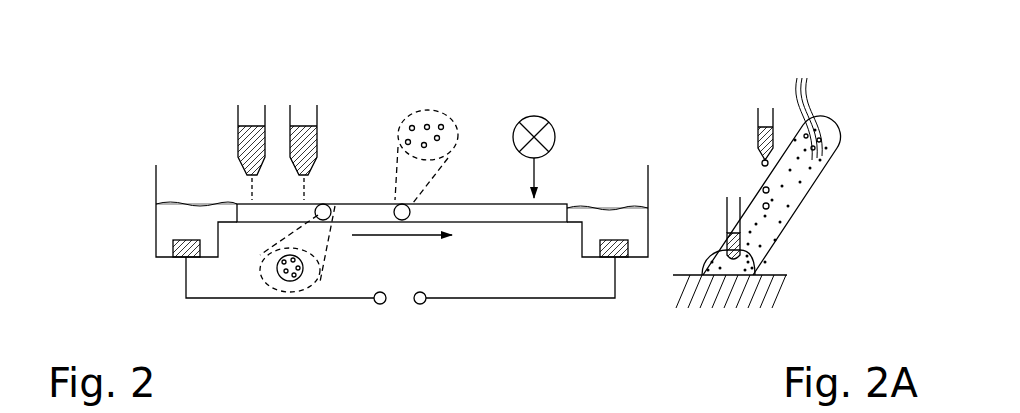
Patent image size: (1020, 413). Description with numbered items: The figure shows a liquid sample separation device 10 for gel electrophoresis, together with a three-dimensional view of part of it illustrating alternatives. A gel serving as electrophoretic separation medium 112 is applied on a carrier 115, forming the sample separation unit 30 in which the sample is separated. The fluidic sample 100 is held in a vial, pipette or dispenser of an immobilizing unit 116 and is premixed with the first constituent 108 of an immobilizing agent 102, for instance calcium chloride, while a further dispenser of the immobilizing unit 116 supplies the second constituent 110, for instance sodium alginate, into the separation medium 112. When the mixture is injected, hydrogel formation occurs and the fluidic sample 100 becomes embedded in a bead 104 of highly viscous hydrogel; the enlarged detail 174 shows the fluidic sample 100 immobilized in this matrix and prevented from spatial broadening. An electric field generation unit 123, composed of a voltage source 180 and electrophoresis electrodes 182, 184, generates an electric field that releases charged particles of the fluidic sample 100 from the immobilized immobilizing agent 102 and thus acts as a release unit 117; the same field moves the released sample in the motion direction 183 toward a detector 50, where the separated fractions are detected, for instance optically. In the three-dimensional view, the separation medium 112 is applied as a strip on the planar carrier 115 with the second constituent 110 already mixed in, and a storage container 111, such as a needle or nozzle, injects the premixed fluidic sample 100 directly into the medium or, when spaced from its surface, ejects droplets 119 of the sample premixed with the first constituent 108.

In FIG. 2, the sample separation device 10 is at (125, 190).
In FIG. 2A, the sample separation device 10 is at (833, 102).
In FIG. 2, the sample separation unit 30 is at (458, 209).
In FIG. 2, the detector 50 is at (536, 115).
In FIG. 2, the fluidic sample 100 is at (248, 127).
In FIG. 2A, the fluidic sample 100 is at (757, 137).
In FIG. 2, the immobilizing agent 102 is at (250, 157).
In FIG. 2, the bead 104 is at (262, 268).
In FIG. 2, the first constituent 108 is at (238, 142).
In FIG. 2A, the first constituent 108 is at (746, 244).
In FIG. 2, the second constituent 110 is at (298, 136).
In FIG. 2A, the second constituent 110 is at (808, 107).
In FIG. 2A, the storage container 111 is at (747, 197).
In FIG. 2, the separation medium 112 is at (416, 130).
In FIG. 2A, the separation medium 112 is at (800, 177).
In FIG. 2, the carrier 115 is at (483, 227).
In FIG. 2A, the carrier 115 is at (728, 296).
In FIG. 2, the immobilizing unit 116 is at (227, 82).
In FIG. 2, the release unit 117 is at (178, 231).
In FIG. 2A, the droplets 119 is at (776, 212).
In FIG. 2, the electric field generation unit 123 is at (402, 206).
In FIG. 2, the detail 174 is at (318, 236).
In FIG. 2, the voltage source 180 is at (383, 292).
In FIG. 2, the electrophoresis electrode 182 is at (173, 246).
In FIG. 2, the motion direction 183 is at (427, 240).
In FIG. 2, the electrophoresis electrode 184 is at (623, 258).